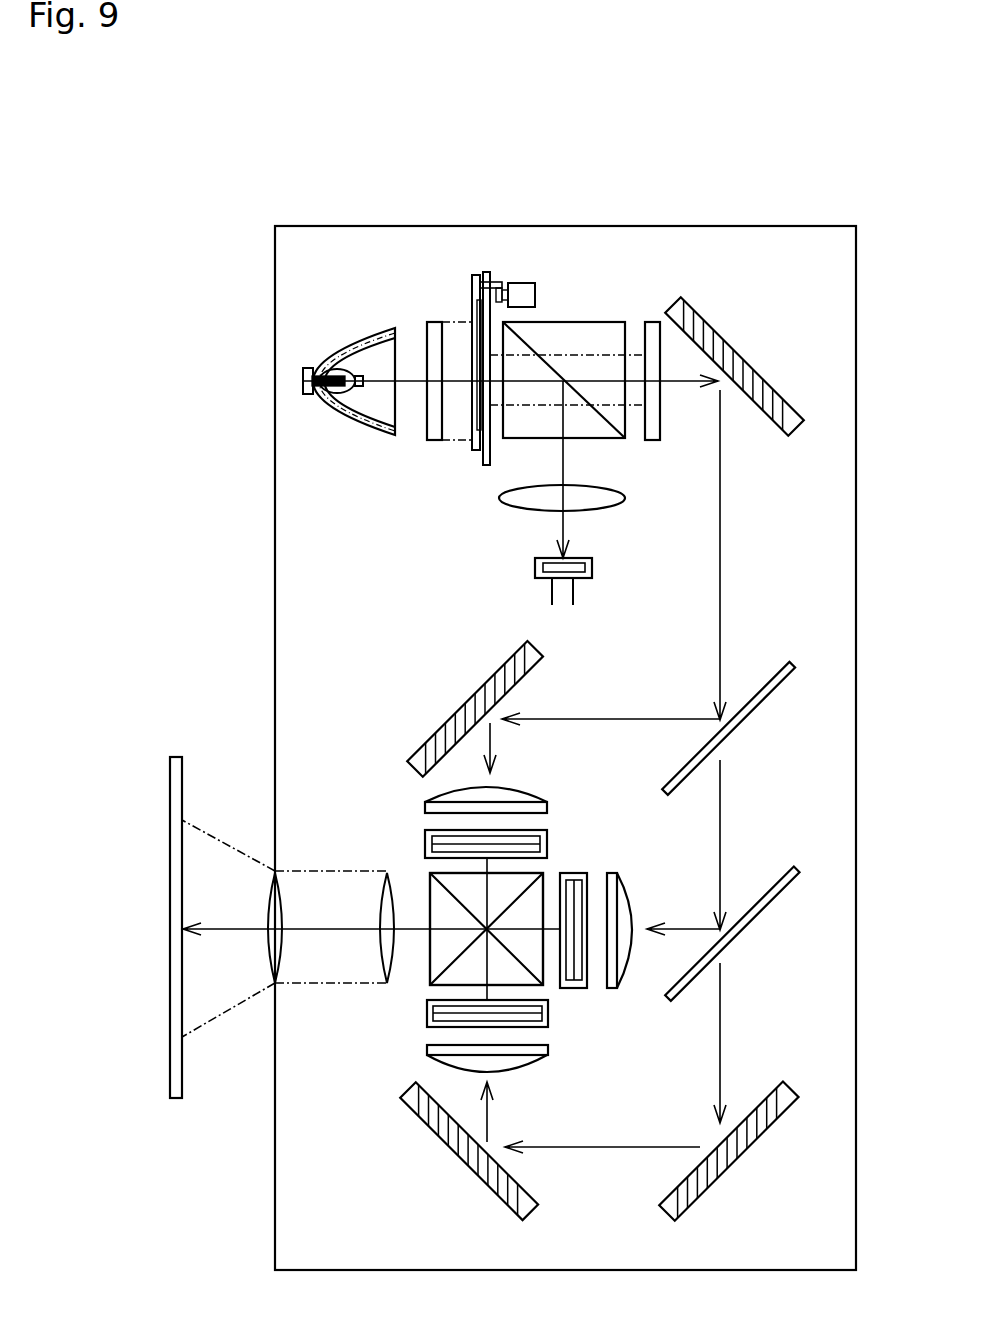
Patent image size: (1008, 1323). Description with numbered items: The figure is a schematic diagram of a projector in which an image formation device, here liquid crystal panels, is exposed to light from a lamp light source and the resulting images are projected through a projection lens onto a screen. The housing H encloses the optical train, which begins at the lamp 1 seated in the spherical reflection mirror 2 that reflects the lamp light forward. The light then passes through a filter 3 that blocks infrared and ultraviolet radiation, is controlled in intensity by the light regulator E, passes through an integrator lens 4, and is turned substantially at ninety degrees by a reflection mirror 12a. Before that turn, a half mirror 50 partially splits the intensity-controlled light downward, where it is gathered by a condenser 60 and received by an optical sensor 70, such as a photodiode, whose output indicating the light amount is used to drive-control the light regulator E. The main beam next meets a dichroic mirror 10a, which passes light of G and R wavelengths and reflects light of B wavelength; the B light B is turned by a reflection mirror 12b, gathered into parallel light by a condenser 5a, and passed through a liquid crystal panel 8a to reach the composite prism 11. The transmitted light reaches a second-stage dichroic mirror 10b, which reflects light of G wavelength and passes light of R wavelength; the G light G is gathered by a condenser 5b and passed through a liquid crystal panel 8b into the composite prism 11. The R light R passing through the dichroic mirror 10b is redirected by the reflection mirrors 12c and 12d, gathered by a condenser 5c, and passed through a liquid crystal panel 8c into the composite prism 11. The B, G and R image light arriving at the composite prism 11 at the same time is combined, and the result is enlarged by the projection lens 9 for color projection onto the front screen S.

The lamp 1 is at (333, 366).
The spherical reflection mirror 2 is at (378, 360).
The filter 3 is at (432, 322).
The integrator lens 4 is at (650, 322).
The half mirror 50 is at (590, 338).
The light regulator E is at (508, 282).
The reflection mirror 12a is at (752, 355).
The condenser 60 is at (498, 494).
The optical sensor 70 is at (535, 568).
The reflection mirror 12b is at (478, 690).
The light of B wavelength B is at (602, 726).
The dichroic mirror 10a is at (755, 710).
The front screen S is at (172, 756).
The projection lens 9 is at (326, 868).
The condenser 5a is at (513, 790).
The liquid crystal panel 8a is at (426, 840).
The composite prism 11 is at (546, 870).
The liquid crystal panel 8b is at (582, 990).
The condenser 5b is at (625, 988).
The light of G wavelength G is at (683, 911).
The dichroic mirror 10b is at (758, 940).
The liquid crystal panel 8c is at (427, 1018).
The condenser 5c is at (520, 1062).
The light of R wavelength R is at (590, 1117).
The reflection mirror 12d is at (445, 1150).
The reflection mirror 12c is at (735, 1178).
The housing H is at (275, 420).